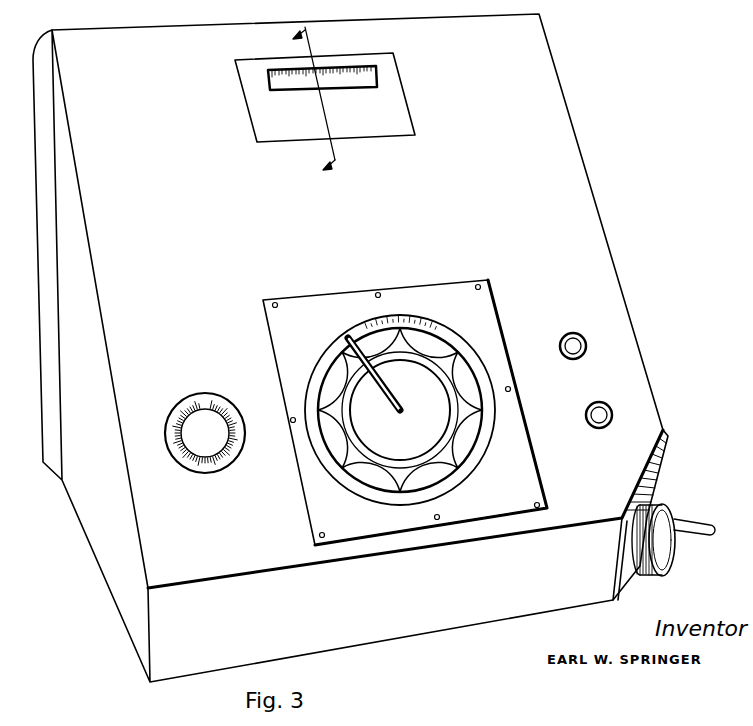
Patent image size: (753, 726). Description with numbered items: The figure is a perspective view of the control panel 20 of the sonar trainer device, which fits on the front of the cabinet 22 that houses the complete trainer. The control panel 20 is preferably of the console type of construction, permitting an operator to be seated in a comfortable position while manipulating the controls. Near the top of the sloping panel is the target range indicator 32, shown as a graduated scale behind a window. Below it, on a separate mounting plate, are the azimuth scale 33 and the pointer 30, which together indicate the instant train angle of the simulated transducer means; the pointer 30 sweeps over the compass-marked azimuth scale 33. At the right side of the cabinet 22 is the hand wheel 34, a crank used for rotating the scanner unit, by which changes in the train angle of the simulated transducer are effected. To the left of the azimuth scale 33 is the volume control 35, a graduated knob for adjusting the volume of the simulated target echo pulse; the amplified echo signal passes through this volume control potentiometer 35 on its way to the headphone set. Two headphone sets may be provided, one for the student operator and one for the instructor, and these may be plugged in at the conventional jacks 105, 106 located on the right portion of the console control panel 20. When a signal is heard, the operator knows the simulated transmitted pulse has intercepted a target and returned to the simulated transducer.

The control panel 20 is at (528, 148).
The cabinet 22 is at (610, 251).
The pointer 30 is at (365, 345).
The target range indicator 32 is at (344, 78).
The azimuth scale 33 is at (432, 318).
The hand wheel 34 is at (676, 547).
The volume control 35 is at (205, 393).
The jack 105 is at (584, 336).
The jack 106 is at (601, 404).